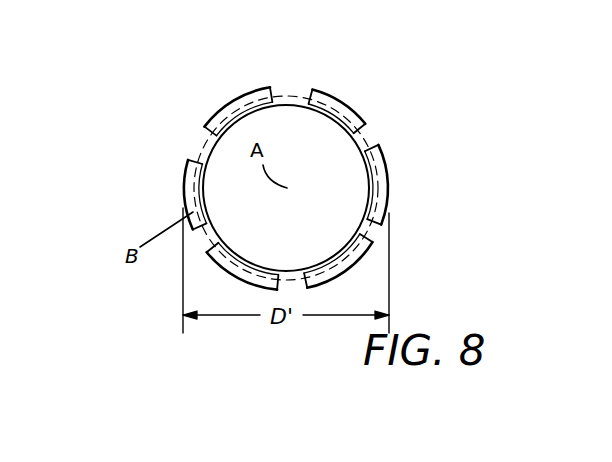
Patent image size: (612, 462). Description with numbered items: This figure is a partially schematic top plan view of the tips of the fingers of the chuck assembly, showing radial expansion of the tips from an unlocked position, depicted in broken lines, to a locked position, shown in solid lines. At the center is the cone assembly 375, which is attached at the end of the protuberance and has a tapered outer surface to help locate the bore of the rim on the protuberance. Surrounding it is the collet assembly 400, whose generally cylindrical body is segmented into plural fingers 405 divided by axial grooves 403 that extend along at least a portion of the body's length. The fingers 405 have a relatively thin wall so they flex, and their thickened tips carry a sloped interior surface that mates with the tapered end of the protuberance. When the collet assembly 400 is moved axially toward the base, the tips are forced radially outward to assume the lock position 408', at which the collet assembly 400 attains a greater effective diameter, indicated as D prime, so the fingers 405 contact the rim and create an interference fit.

The collet assembly 400 is at (198, 141).
The axial grooves 403 is at (271, 99).
The fingers 405 is at (338, 107).
The lock position 408' is at (432, 185).
The cone assembly 375 is at (332, 162).